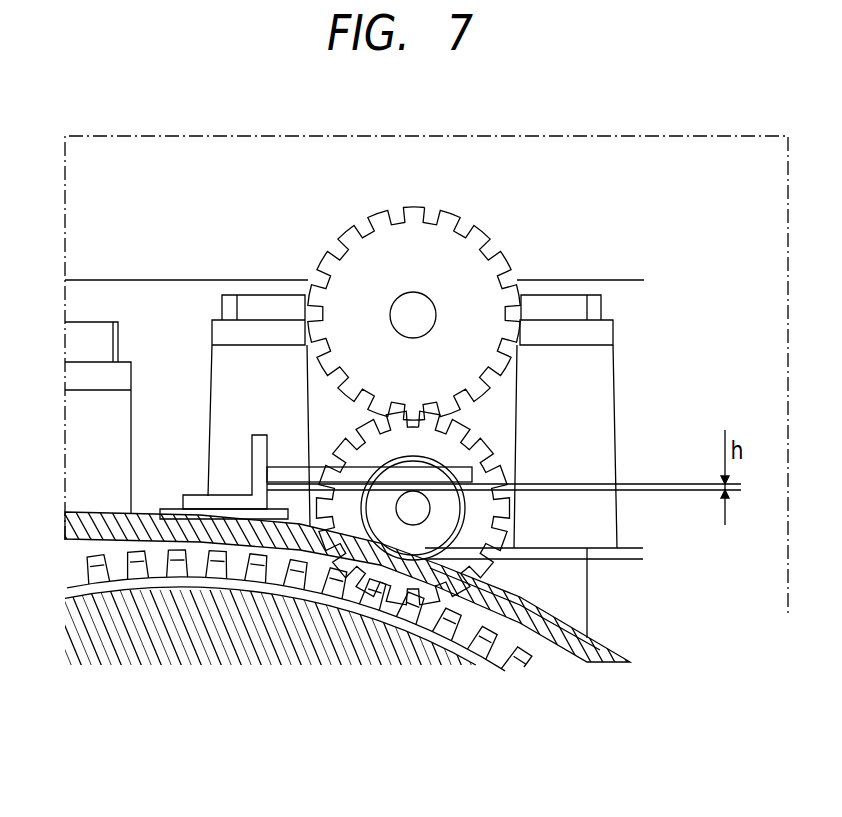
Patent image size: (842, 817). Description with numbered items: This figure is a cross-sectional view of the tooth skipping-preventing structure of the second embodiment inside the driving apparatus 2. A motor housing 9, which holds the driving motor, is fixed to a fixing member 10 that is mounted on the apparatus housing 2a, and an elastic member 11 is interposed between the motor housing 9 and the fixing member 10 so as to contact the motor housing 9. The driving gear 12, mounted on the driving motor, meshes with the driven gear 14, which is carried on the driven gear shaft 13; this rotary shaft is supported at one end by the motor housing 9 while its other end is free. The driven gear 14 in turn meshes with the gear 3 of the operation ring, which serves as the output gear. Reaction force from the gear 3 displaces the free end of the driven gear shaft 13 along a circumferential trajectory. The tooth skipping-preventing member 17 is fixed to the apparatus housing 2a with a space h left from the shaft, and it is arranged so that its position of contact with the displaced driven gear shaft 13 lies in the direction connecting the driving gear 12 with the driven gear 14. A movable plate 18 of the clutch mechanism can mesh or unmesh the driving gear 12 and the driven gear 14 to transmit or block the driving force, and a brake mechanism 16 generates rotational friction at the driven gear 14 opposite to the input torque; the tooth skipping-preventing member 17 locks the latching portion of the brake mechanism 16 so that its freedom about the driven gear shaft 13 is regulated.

The driving apparatus 2 is at (196, 136).
The apparatus housing 2a is at (598, 648).
The gear 3 is at (473, 657).
The motor housing 9 is at (566, 305).
The fixing member 10 is at (597, 375).
The elastic member 11 is at (597, 333).
The driving gear 12 is at (360, 257).
The driven gear shaft 13 is at (409, 515).
The driven gear 14 is at (455, 422).
The brake mechanism 16 is at (383, 517).
The tooth skipping-preventing member 17 is at (296, 472).
The movable plate 18 is at (492, 554).